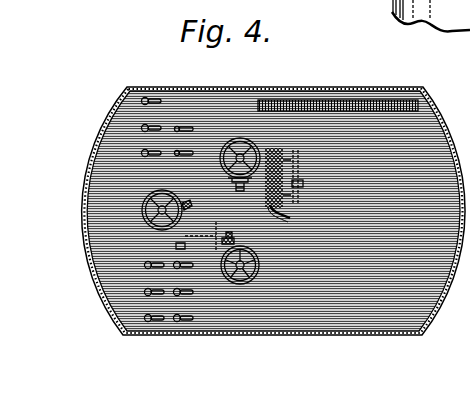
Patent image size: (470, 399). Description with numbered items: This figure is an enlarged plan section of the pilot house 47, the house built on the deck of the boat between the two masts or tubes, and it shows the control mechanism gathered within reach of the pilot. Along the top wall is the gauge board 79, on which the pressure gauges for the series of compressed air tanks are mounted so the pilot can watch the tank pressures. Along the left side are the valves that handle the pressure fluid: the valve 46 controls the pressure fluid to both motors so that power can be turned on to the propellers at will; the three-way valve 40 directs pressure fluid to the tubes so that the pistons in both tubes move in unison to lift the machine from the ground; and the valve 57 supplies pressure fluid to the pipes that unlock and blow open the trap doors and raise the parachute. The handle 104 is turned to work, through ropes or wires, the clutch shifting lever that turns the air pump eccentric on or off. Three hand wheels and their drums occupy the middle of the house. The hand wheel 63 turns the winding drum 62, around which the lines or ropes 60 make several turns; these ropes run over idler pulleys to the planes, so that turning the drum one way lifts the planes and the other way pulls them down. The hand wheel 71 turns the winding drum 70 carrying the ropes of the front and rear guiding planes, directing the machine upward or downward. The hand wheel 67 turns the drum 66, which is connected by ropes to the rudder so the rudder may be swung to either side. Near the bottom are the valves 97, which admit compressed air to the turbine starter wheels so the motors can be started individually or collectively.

The pilot house 47 is at (84, 172).
The gauge board 79 is at (356, 108).
The valve 46 is at (143, 99).
The three-way valve 40 is at (143, 126).
The valve 57 is at (143, 151).
The handle 104 is at (193, 130).
The hand wheel 63 is at (240, 138).
The winding drum 62 is at (289, 160).
The hand wheel 71 is at (145, 212).
The winding drum 70 is at (168, 232).
The lines or ropes 60 is at (291, 222).
The drum 66 is at (228, 242).
The hand wheel 67 is at (255, 278).
The valve 97 is at (144, 267).